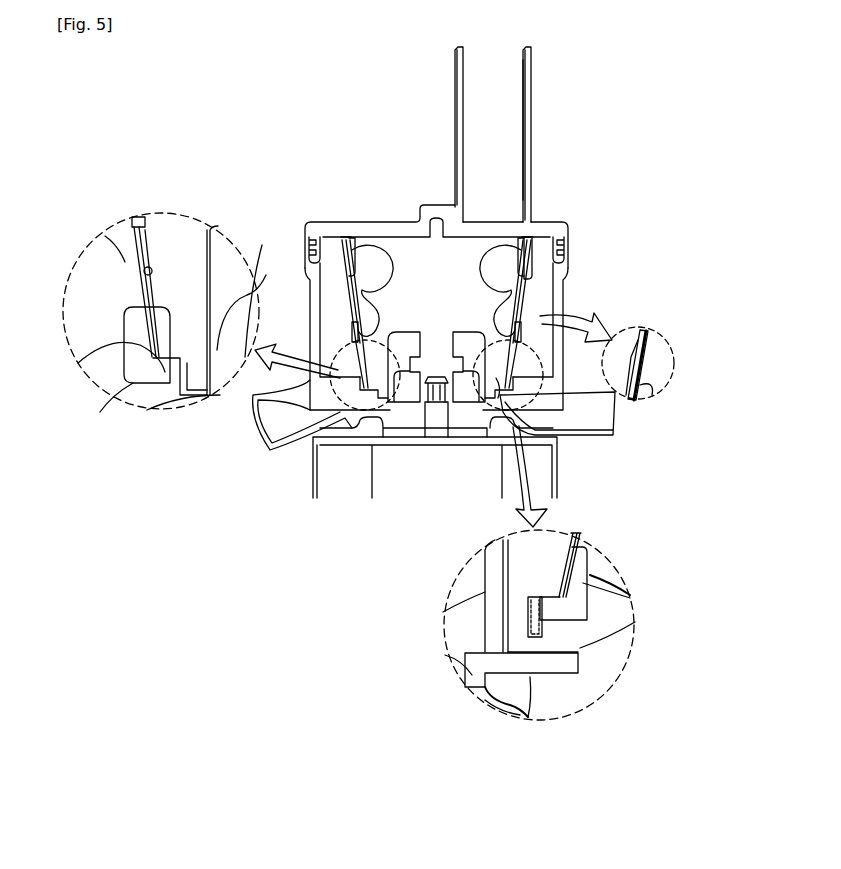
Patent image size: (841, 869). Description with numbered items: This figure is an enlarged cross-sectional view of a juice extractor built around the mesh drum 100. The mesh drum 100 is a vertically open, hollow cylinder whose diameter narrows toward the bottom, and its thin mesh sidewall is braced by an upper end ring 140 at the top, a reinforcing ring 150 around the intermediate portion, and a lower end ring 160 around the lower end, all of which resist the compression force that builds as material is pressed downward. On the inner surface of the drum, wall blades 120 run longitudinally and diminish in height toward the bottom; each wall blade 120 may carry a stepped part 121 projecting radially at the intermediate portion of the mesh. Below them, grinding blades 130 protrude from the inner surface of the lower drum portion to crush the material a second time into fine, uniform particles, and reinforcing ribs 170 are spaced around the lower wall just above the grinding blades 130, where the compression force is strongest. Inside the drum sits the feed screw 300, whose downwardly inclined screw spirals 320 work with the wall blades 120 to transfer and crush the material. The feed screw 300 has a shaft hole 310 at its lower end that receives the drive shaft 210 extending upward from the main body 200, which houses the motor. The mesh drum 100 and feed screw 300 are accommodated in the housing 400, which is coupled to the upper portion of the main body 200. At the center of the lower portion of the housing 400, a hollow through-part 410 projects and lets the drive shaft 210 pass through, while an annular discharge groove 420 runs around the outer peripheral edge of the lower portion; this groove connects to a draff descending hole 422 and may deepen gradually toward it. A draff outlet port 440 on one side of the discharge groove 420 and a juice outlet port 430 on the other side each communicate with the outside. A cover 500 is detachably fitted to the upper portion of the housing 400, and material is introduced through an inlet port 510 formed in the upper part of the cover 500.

The mesh drum 100 is at (538, 288).
The wall blade 120 is at (533, 217).
The stepped part 121 is at (626, 357).
The grinding blade 130 is at (155, 380).
The upper end ring 140 is at (547, 253).
The reinforcing ring 150 is at (502, 385).
The lower end ring 160 is at (115, 385).
The reinforcing rib 170 is at (110, 247).
The main body 200 is at (570, 475).
The drive shaft 210 is at (430, 413).
The feed screw 300 is at (177, 238).
The shaft hole 310 is at (450, 385).
The screw spiral 320 is at (138, 217).
The housing 400 is at (290, 375).
The hollow through-part 410 is at (240, 250).
The annular discharge groove 420 is at (175, 400).
The draff descending hole 422 is at (530, 680).
The juice outlet port 430 is at (287, 438).
The draff outlet port 440 is at (597, 418).
The cover 500 is at (540, 132).
The inlet port 510 is at (522, 95).